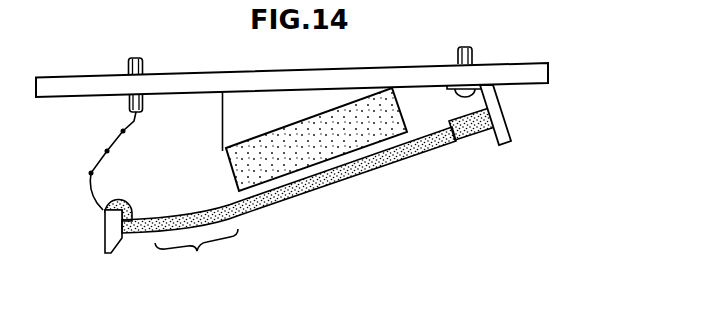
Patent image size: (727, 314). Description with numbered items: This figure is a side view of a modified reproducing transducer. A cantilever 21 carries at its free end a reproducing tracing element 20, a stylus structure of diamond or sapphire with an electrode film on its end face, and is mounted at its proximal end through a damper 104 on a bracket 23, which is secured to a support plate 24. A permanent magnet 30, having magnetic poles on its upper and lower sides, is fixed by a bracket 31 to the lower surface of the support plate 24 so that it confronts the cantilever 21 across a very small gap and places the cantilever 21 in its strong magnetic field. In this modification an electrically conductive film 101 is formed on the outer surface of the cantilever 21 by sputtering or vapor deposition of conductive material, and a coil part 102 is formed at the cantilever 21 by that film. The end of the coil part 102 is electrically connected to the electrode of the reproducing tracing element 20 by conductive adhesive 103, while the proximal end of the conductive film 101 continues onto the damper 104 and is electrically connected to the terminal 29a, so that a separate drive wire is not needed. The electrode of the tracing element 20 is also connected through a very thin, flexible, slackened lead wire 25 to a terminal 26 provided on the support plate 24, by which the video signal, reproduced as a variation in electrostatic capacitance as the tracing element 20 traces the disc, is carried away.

The reproducing tracing element 20 is at (105, 231).
The cantilever 21 is at (407, 163).
The bracket 23 is at (503, 113).
The support plate 24 is at (385, 68).
The lead wire 25 is at (92, 172).
The terminal 26 is at (143, 63).
The terminal 29a is at (473, 52).
The permanent magnet 30 is at (230, 165).
The bracket 31 is at (222, 118).
The electrically conductive film 101 is at (327, 186).
The coil part 102 is at (196, 259).
The conductive adhesive 103 is at (144, 189).
The damper 104 is at (472, 141).